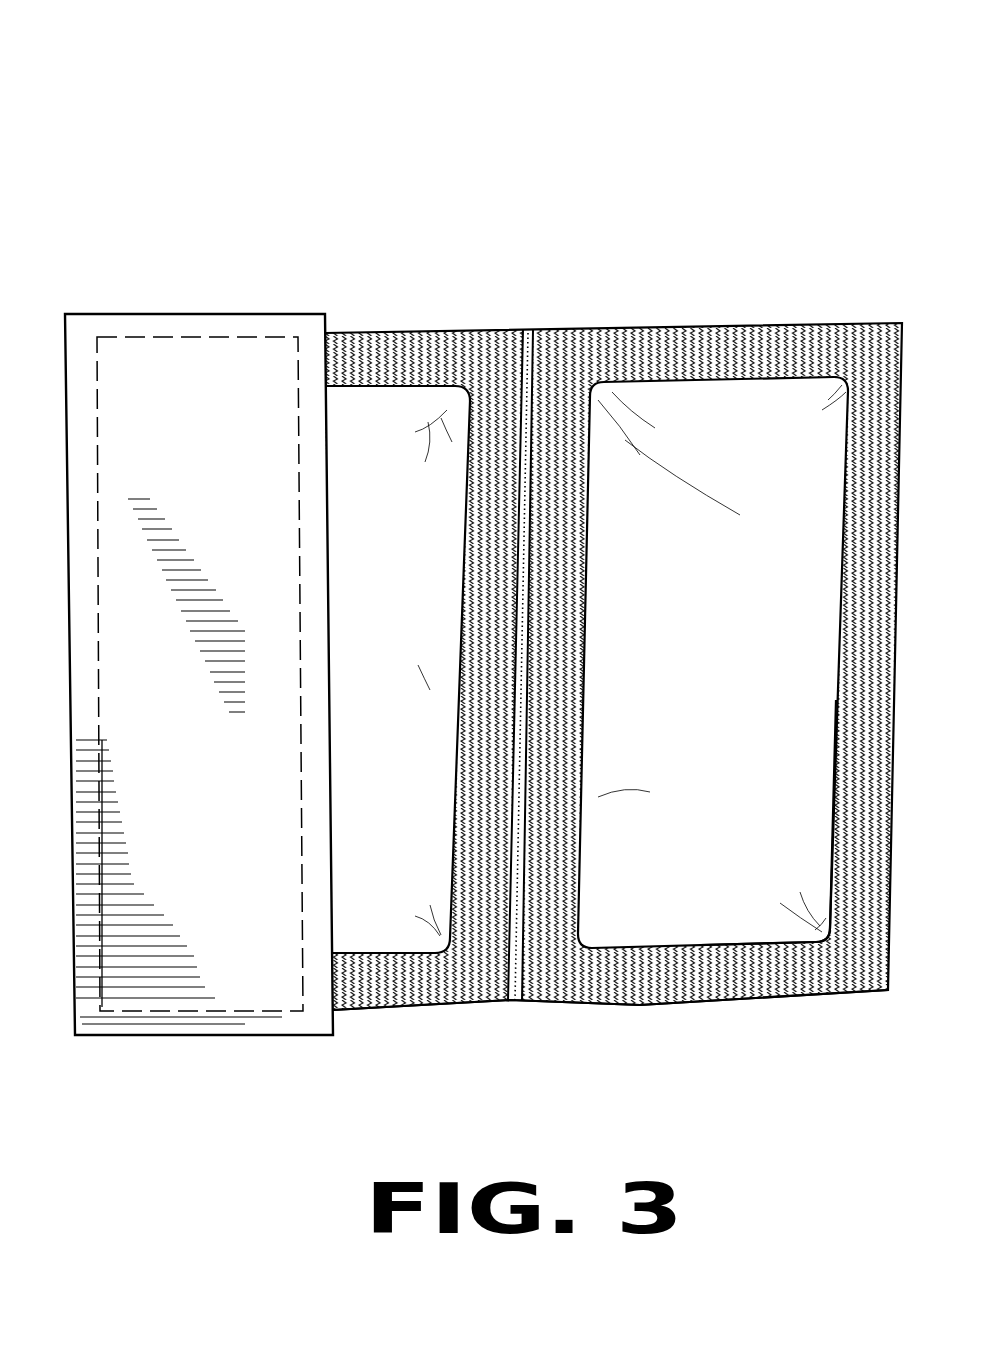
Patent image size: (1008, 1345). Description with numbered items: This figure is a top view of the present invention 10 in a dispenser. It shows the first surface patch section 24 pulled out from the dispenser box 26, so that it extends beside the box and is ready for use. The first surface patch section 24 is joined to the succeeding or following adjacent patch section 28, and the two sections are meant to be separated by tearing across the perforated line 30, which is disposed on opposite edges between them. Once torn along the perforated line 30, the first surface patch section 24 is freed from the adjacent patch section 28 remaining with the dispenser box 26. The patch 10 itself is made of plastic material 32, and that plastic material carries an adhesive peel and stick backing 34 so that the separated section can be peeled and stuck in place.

The present invention 10 is at (587, 213).
The first surface patch section 24 is at (708, 396).
The dispenser box 26 is at (242, 314).
The succeeding adjacent patch section 28 is at (418, 403).
The perforated line 30 is at (528, 333).
The plastic material 32 is at (785, 930).
The adhesive peel and stick backing 34 is at (620, 968).